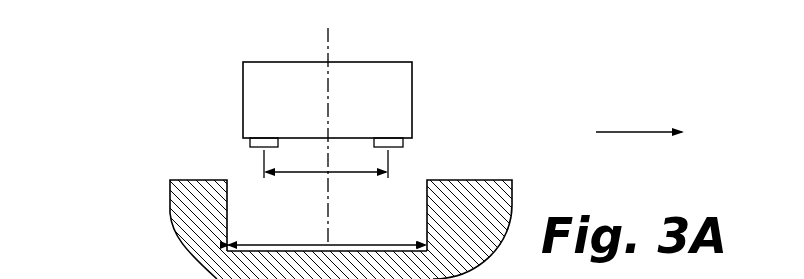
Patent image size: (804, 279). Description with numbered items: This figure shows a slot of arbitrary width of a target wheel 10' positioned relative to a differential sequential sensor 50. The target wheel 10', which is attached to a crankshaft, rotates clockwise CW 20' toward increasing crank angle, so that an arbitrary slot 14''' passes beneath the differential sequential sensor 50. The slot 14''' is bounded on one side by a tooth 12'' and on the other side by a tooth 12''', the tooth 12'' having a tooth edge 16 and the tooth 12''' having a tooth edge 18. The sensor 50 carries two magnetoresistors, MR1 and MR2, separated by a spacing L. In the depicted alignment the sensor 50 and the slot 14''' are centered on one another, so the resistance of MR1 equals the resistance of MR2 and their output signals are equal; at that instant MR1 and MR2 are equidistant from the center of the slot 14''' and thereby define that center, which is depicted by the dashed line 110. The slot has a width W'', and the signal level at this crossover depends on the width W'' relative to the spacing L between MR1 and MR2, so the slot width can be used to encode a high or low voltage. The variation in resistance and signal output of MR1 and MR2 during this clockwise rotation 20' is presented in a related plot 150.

The target wheel 10' is at (298, 228).
The tooth 12''' is at (170, 201).
The tooth 12'' is at (494, 210).
The slot 14''' is at (327, 217).
The tooth edge 18 is at (227, 203).
The tooth edge 16 is at (427, 238).
The width of the slot W'' is at (327, 216).
The differential sequential sensor 50 is at (398, 73).
The dashed line 110 is at (332, 43).
The magnetoresistor MR1 is at (265, 137).
The magnetoresistor MR2 is at (398, 147).
The spacing between MR1 and MR2 L is at (361, 174).
The plot 150 is at (103, 278).
The clockwise CW is at (640, 122).
The clockwise rotation 20' is at (672, 152).